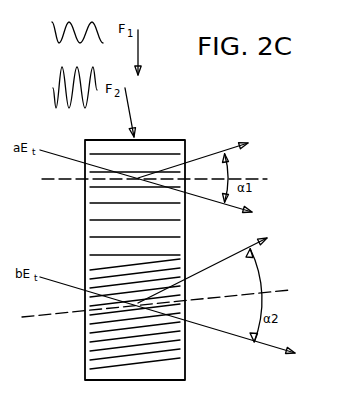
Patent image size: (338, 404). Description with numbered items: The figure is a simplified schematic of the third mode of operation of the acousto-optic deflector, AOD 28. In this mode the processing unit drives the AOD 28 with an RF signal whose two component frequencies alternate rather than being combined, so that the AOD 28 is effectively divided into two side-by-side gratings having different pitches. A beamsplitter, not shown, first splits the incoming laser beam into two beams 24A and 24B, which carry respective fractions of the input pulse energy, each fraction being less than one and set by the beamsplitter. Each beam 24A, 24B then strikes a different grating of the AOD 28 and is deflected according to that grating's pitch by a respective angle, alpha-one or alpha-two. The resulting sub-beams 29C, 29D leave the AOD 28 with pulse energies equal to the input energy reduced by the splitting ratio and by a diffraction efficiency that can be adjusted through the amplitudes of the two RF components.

The beam 24A is at (72, 157).
The beam 24B is at (73, 285).
The acousto-optic deflector 28 is at (185, 364).
The sub-beam 29C is at (220, 152).
The sub-beam 29D is at (230, 257).